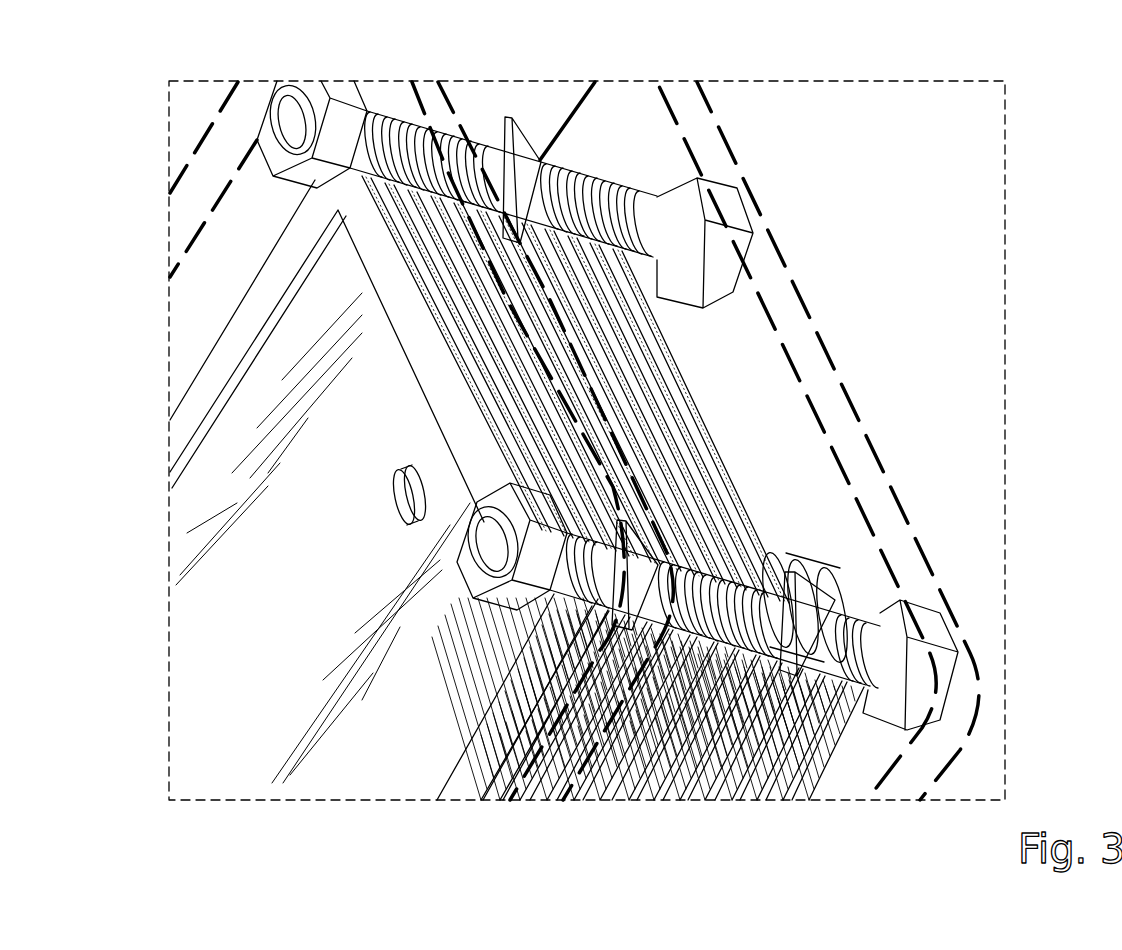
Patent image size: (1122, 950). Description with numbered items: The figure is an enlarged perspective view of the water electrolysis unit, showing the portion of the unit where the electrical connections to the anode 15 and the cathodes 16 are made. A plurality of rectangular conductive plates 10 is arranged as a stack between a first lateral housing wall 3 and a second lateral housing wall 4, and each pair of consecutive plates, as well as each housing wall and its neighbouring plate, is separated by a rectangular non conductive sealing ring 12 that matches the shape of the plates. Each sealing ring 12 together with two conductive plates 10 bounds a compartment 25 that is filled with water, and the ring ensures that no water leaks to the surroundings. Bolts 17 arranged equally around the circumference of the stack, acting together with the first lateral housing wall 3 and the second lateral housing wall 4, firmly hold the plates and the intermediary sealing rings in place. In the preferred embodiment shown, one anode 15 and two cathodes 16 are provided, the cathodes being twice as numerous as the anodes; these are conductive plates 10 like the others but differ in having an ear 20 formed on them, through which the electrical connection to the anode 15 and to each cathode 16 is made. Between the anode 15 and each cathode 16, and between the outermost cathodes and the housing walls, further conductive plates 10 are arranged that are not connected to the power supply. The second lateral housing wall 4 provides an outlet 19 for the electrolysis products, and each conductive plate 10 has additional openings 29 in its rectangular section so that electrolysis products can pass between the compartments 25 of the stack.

The first lateral housing wall 3 is at (208, 175).
The second lateral housing wall 4 is at (818, 386).
The conductive plate 10 is at (670, 378).
The non conductive sealing ring 12 is at (213, 386).
The anode 15 is at (587, 780).
The cathode 16 is at (507, 780).
The bolt 17 is at (605, 185).
The outlet 19 is at (830, 573).
The ear 20 is at (506, 118).
The compartment 25 is at (198, 649).
The opening 29 is at (408, 488).